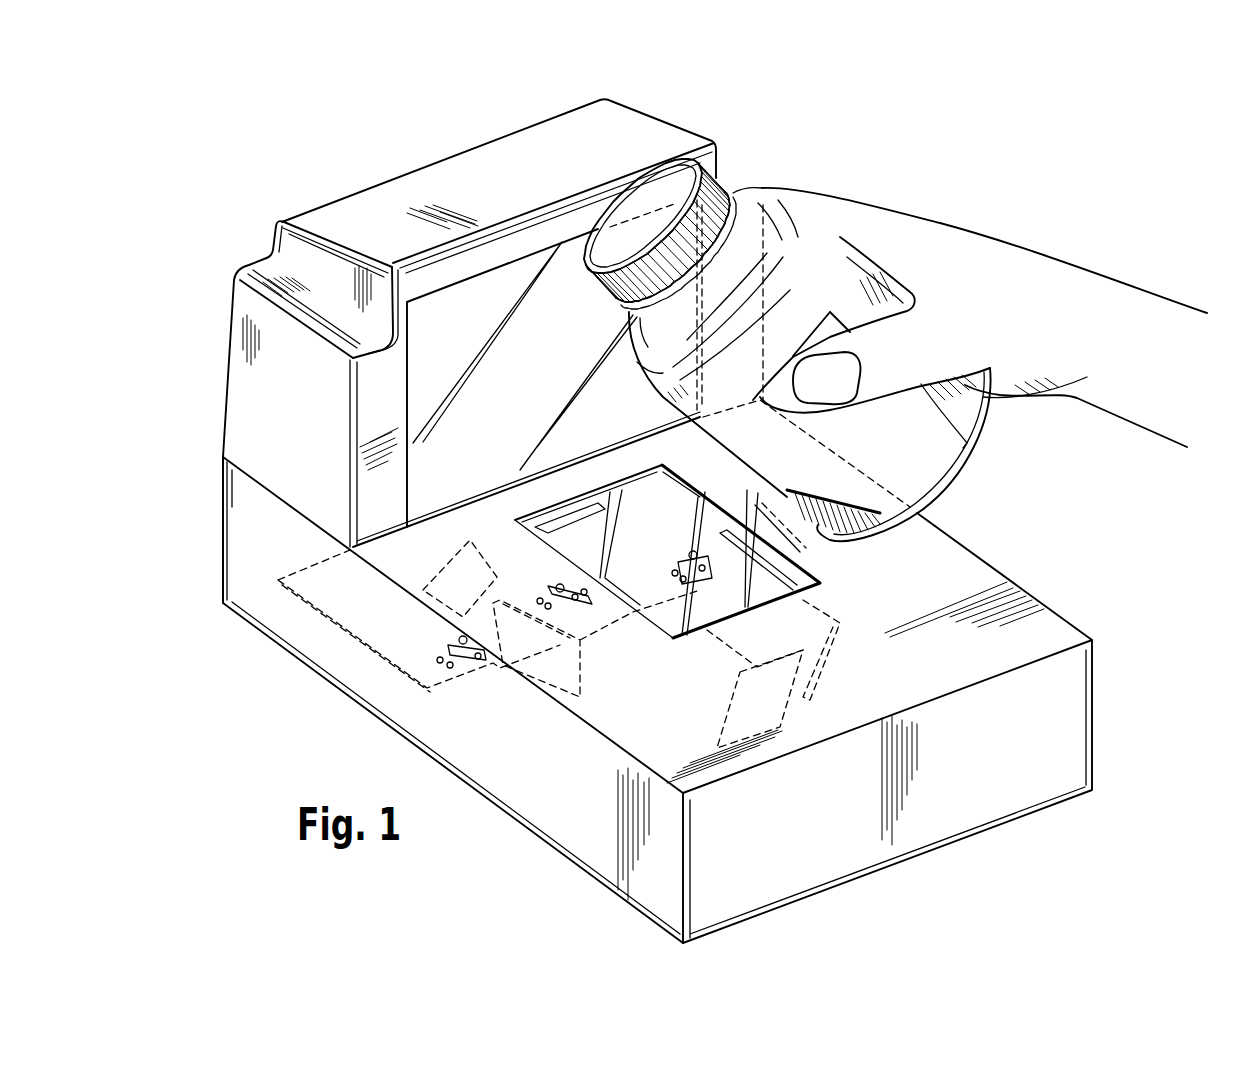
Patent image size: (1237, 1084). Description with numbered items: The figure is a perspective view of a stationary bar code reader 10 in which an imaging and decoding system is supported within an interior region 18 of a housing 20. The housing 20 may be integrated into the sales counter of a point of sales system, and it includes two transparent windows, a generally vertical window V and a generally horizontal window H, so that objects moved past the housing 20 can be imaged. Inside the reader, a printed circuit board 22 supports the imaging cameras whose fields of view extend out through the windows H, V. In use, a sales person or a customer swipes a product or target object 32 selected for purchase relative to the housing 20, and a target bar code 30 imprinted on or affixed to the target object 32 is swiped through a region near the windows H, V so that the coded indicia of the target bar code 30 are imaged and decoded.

The stationary bar code reader 10 is at (330, 142).
The interior region 18 is at (493, 307).
The housing 20 is at (350, 213).
The printed circuit board 22 is at (380, 632).
The target bar code 30 is at (865, 500).
The target object 32 is at (805, 267).
The vertical window V is at (493, 410).
The horizontal window H is at (633, 572).